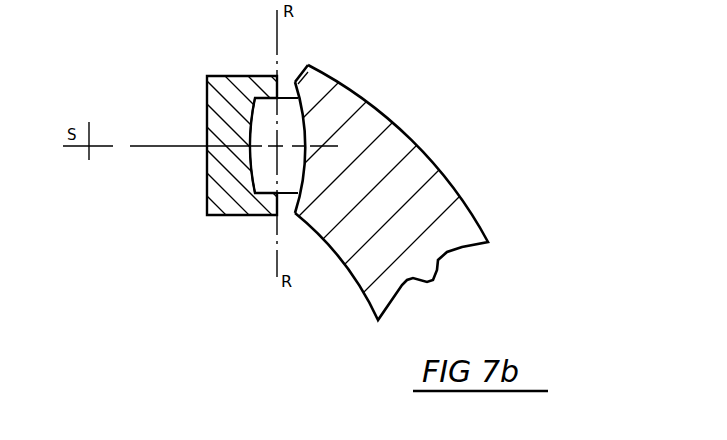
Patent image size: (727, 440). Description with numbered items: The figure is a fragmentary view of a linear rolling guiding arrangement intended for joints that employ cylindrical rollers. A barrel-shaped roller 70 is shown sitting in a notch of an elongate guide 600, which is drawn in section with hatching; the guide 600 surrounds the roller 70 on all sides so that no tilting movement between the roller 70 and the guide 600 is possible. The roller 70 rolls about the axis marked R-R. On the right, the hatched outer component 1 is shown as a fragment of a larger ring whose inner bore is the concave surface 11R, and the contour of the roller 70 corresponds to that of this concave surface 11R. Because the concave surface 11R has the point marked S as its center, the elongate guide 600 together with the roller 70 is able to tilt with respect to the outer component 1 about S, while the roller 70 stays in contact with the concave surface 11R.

The elongate guide 600 is at (215, 94).
The barrel-shaped roller 70 is at (267, 110).
The outer component 1 is at (370, 112).
The concave surface 11R is at (305, 163).